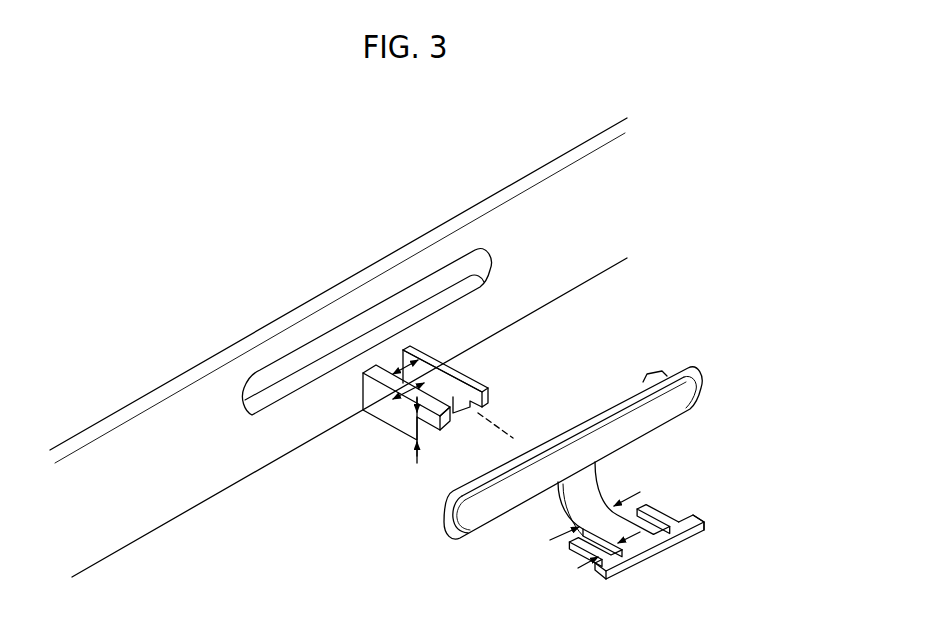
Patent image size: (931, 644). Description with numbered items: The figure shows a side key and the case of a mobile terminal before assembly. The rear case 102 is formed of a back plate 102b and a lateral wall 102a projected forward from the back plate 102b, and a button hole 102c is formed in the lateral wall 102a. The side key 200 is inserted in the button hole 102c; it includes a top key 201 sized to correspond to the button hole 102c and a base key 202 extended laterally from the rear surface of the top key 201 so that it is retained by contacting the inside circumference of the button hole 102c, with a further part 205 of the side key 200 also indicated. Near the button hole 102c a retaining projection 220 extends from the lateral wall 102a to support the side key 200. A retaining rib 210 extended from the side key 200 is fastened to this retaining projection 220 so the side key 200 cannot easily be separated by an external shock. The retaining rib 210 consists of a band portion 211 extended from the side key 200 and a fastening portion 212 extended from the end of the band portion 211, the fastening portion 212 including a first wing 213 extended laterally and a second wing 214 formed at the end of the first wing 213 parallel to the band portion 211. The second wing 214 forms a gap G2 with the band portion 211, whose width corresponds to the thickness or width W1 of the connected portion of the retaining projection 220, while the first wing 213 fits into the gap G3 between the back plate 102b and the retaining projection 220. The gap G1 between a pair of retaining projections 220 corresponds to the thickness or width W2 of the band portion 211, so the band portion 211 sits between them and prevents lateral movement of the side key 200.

The rear case 102 is at (188, 303).
The lateral wall 102a is at (137, 447).
The back plate 102b is at (230, 497).
The button hole 102c is at (371, 323).
The side key 200 is at (735, 304).
The top key 201 is at (648, 382).
The base key 202 is at (680, 372).
The rounded end 205 is at (703, 378).
The retaining rib 210 is at (715, 395).
The band portion 211 is at (587, 498).
The fastening portion 212 is at (815, 440).
The first wing 213 is at (693, 528).
The second wing 214 is at (670, 510).
The retaining projection 220 is at (455, 386).
The gap G1 is at (408, 350).
The gap G2 is at (596, 559).
The gap G3 is at (417, 461).
The thickness or width of the connected portion W1 is at (404, 404).
The thickness or width of the band portion W2 is at (582, 523).